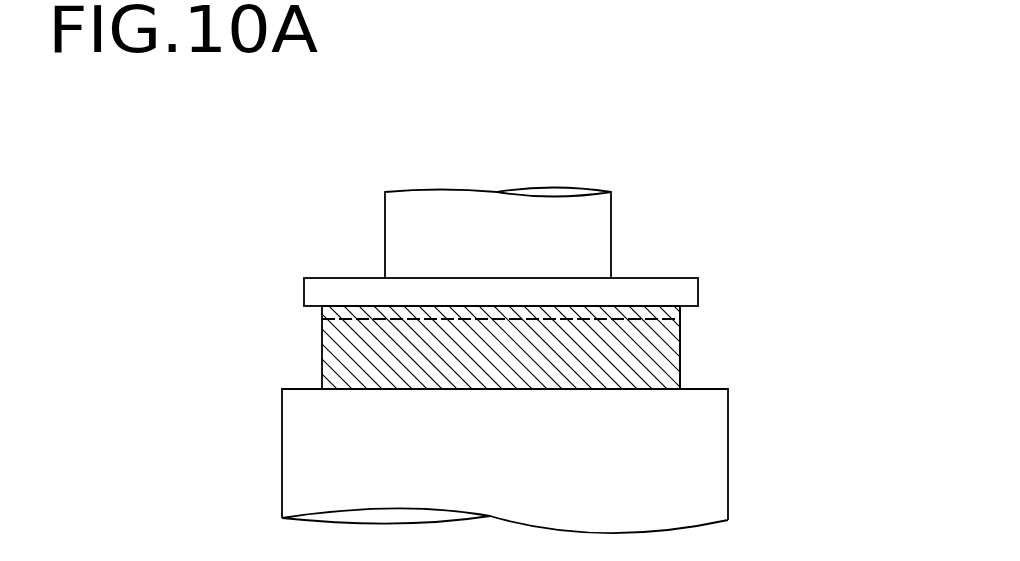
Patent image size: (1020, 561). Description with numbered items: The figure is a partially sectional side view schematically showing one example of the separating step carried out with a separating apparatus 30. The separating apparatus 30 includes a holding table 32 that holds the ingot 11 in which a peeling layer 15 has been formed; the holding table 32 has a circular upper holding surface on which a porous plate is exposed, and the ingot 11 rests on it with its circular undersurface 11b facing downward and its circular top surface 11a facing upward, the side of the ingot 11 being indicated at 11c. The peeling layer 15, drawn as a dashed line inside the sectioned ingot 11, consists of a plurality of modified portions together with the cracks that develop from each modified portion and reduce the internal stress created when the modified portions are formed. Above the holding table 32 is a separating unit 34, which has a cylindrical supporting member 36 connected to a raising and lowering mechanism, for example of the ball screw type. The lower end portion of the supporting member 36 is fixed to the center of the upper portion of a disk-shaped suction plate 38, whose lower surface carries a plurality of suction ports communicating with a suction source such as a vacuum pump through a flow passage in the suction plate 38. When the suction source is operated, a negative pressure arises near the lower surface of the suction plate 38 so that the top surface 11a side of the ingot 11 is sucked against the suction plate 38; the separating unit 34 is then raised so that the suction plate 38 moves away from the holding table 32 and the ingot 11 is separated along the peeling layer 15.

The separating apparatus 30 is at (557, 207).
The separating unit 34 is at (564, 247).
The supporting member 36 is at (605, 225).
The suction plate 38 is at (538, 288).
The ingot 11 is at (498, 344).
The top surface 11a is at (341, 306).
The undersurface 11b is at (585, 390).
The side surface of thermoelectric element 11c is at (682, 367).
The peeling layer 15 is at (440, 319).
The holding table 32 is at (713, 480).